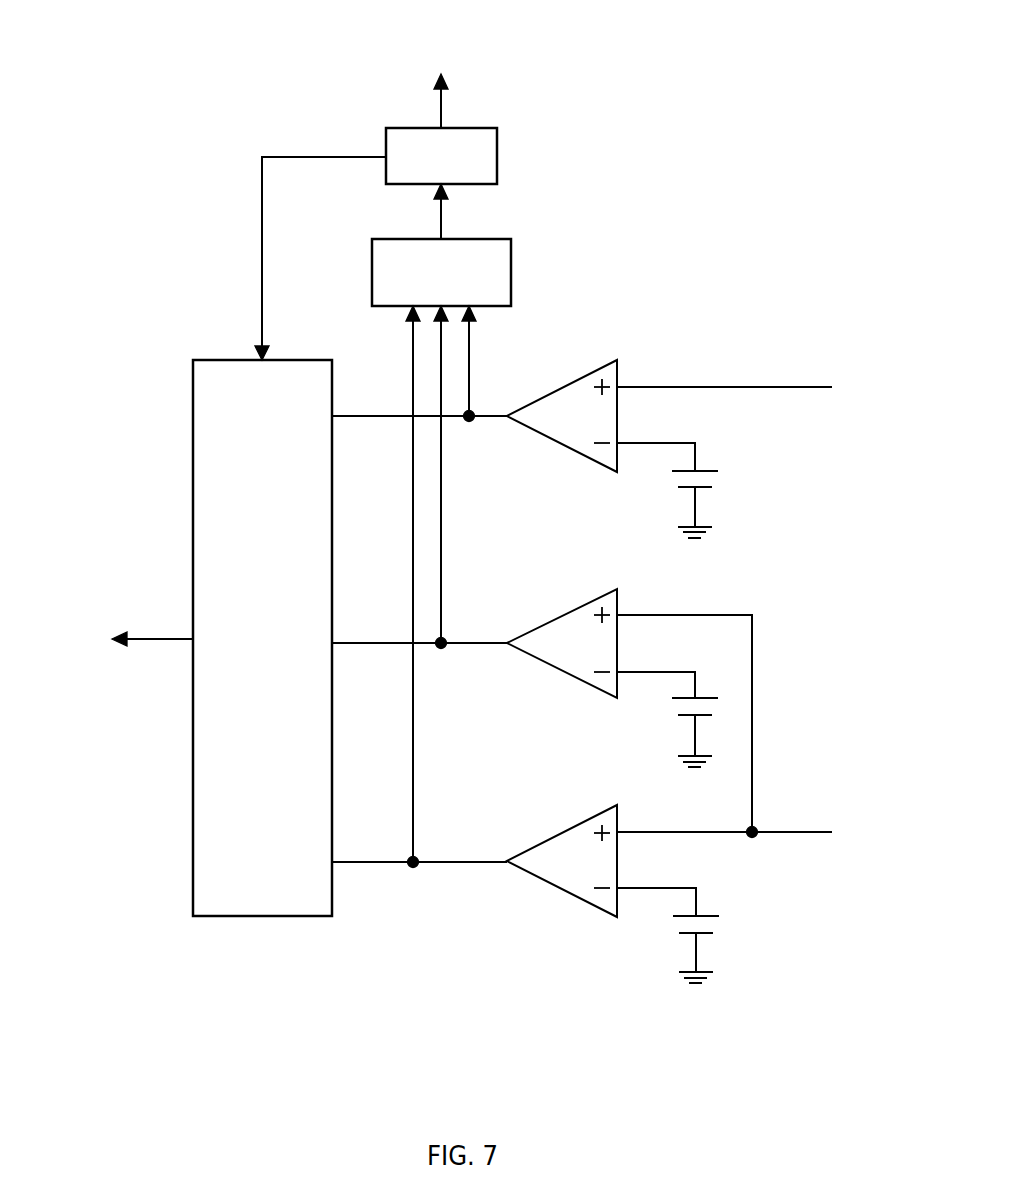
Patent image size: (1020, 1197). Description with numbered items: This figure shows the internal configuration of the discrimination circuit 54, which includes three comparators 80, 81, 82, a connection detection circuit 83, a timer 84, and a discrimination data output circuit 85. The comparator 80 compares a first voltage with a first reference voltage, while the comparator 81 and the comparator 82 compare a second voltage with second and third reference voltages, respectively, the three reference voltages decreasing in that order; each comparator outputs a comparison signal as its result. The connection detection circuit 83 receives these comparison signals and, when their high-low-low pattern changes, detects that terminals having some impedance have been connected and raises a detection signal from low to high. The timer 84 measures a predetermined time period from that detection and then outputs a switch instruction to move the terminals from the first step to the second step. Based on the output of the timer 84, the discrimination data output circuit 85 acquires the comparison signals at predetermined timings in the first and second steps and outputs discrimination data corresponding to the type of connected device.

The discrimination circuit 54 is at (677, 82).
The comparator 80 is at (617, 360).
The comparator 81 is at (571, 676).
The comparator 82 is at (571, 894).
The connection detection circuit 83 is at (511, 239).
The timer 84 is at (497, 128).
The discrimination data output circuit 85 is at (193, 360).